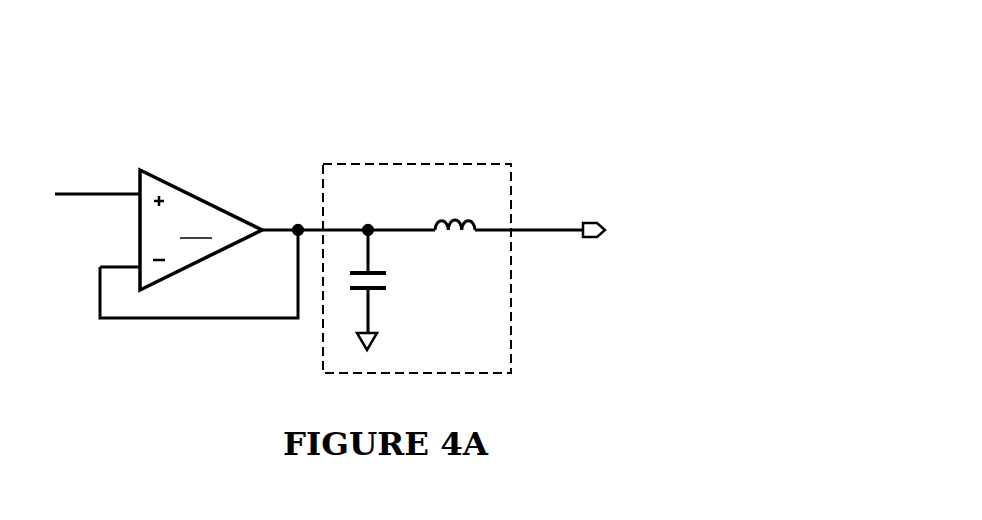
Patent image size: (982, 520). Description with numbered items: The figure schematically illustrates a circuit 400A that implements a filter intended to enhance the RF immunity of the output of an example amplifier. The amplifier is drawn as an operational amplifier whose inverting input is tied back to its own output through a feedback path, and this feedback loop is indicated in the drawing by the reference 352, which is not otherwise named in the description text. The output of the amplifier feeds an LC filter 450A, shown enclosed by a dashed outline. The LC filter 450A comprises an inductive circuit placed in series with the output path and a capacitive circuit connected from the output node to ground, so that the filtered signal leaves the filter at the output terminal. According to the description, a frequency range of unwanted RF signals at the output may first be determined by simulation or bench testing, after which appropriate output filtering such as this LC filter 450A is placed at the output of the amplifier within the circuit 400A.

The circuit 400A is at (705, 80).
The amplifier feedback loop 352 is at (212, 318).
The LC filter 450A is at (512, 363).